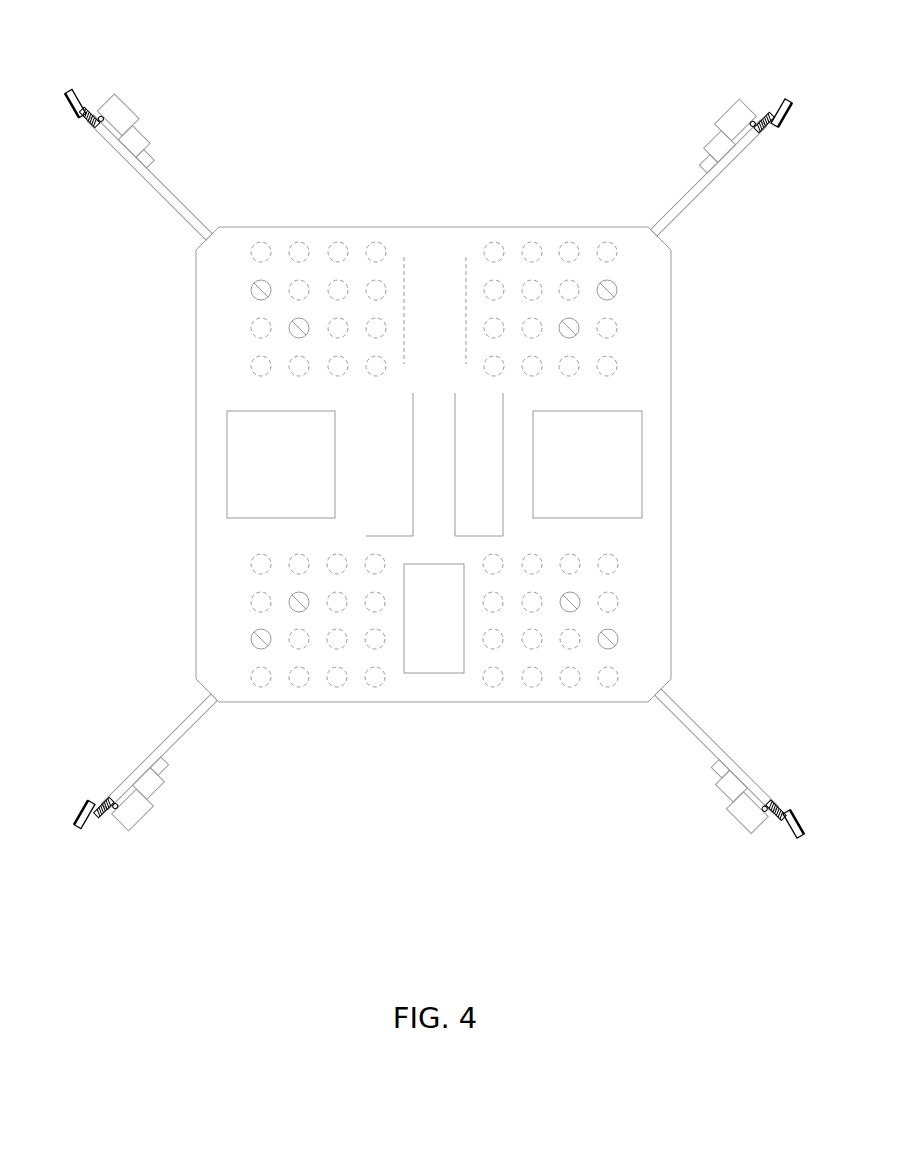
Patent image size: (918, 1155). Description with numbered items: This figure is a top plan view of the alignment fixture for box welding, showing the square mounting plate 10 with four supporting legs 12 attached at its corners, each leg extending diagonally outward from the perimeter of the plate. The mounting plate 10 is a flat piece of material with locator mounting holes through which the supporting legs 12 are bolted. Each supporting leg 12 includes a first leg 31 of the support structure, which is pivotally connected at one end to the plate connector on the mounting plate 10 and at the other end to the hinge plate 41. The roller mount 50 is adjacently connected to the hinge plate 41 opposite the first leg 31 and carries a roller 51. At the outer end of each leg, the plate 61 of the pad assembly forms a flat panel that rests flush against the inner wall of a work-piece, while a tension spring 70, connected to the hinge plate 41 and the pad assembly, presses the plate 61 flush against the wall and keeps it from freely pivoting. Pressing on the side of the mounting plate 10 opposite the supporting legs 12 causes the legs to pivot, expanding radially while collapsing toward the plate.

The mounting plate 10 is at (429, 230).
The plurality of supporting legs 12 is at (433, 465).
The first leg 31 is at (167, 197).
The hinge plate 41 is at (147, 162).
The roller mount 50 is at (142, 143).
The roller 51 is at (128, 104).
The plate 61 is at (80, 115).
The tension spring 70 is at (101, 112).